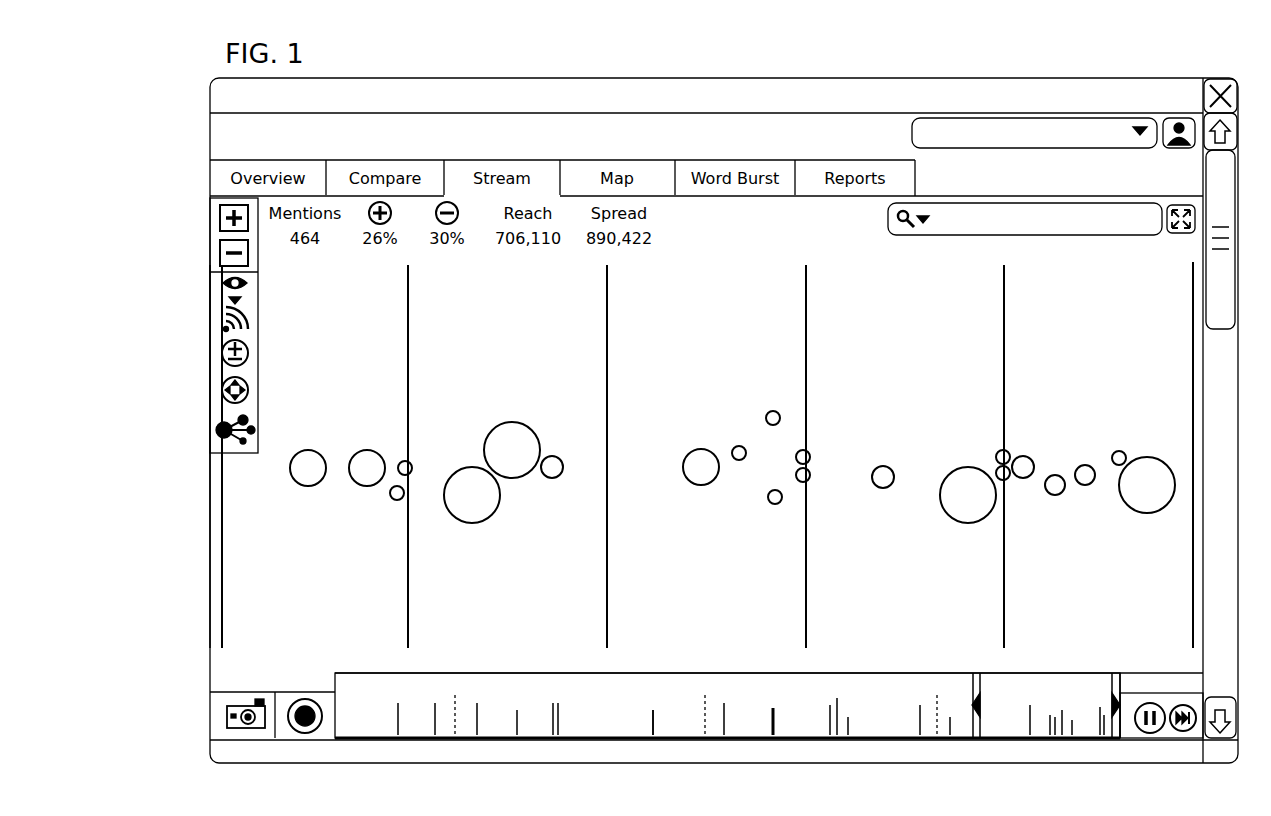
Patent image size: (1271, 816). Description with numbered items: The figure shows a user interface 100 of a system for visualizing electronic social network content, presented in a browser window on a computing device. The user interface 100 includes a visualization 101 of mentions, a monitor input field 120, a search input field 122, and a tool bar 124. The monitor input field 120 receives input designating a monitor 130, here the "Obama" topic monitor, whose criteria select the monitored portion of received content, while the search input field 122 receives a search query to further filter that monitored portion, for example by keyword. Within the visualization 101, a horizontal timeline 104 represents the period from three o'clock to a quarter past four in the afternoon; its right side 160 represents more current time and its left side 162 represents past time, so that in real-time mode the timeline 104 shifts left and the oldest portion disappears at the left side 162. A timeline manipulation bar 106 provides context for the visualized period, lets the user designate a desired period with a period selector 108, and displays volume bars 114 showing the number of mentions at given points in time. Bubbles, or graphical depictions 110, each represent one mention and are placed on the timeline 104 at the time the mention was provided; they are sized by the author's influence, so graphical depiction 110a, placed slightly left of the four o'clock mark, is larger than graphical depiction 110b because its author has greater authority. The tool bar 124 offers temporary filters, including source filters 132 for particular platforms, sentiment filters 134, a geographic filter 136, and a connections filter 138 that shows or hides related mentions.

The user interface 100 is at (905, 50).
The visualization 101 is at (241, 495).
The timeline 104 is at (386, 336).
The timeline manipulation bar 106 is at (528, 742).
The period selector 108 is at (978, 672).
The graphical depictions 110 is at (492, 512).
The graphical depiction 110a is at (968, 525).
The graphical depiction 110b is at (882, 465).
The volume bars 114 is at (657, 718).
The monitor input field 120 is at (1013, 120).
The search input field 122 is at (1025, 235).
The tool bar 124 is at (231, 328).
The monitor 130 is at (290, 138).
The source filters 132 is at (247, 318).
The sentiment filters 134 is at (249, 353).
The geographic filter 136 is at (249, 390).
The connections filter 138 is at (256, 428).
The right side 160 is at (1200, 569).
The left side 162 is at (213, 578).